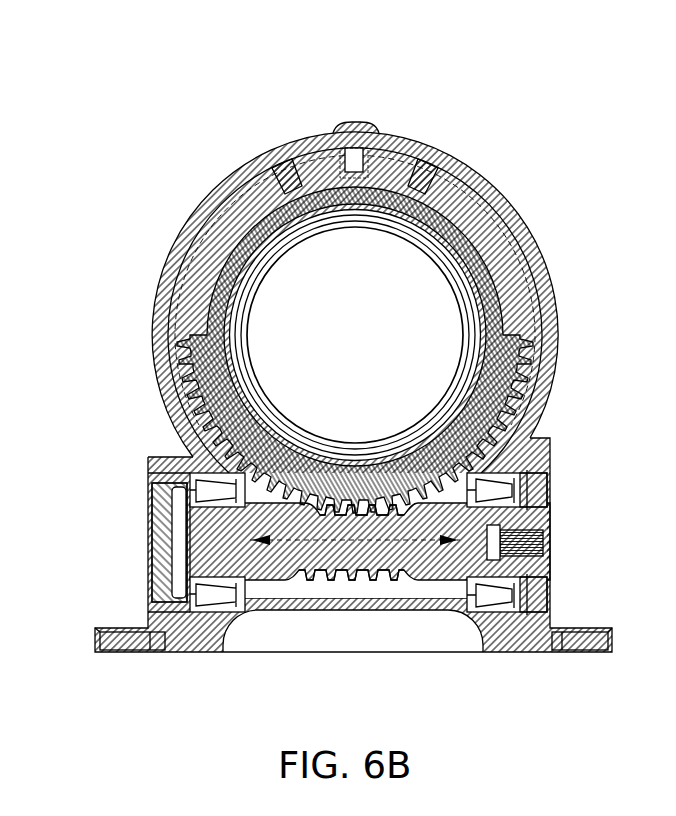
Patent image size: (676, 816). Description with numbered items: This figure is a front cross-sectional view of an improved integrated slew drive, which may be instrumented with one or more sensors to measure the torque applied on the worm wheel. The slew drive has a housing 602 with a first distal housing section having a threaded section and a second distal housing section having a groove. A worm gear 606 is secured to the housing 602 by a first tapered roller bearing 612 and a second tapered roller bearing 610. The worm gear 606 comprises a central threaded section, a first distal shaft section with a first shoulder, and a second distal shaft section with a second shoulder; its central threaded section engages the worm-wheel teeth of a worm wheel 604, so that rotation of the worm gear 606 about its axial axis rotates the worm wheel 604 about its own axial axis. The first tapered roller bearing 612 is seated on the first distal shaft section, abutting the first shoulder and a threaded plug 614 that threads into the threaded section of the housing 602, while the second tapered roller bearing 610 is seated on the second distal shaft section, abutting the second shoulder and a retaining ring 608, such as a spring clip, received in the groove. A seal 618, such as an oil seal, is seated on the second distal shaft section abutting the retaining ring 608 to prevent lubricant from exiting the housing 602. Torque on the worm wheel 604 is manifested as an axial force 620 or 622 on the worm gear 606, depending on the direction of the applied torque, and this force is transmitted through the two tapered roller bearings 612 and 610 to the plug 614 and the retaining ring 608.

The housing 602 is at (392, 131).
The worm wheel 604 is at (548, 364).
The worm gear 606 is at (552, 524).
The retaining ring 608 is at (550, 602).
The second tapered roller bearing 610 is at (472, 622).
The first tapered roller bearing 612 is at (195, 655).
The plug 614 is at (158, 531).
The seal 618 is at (550, 492).
The axial force 620 is at (293, 545).
The axial force 622 is at (415, 545).